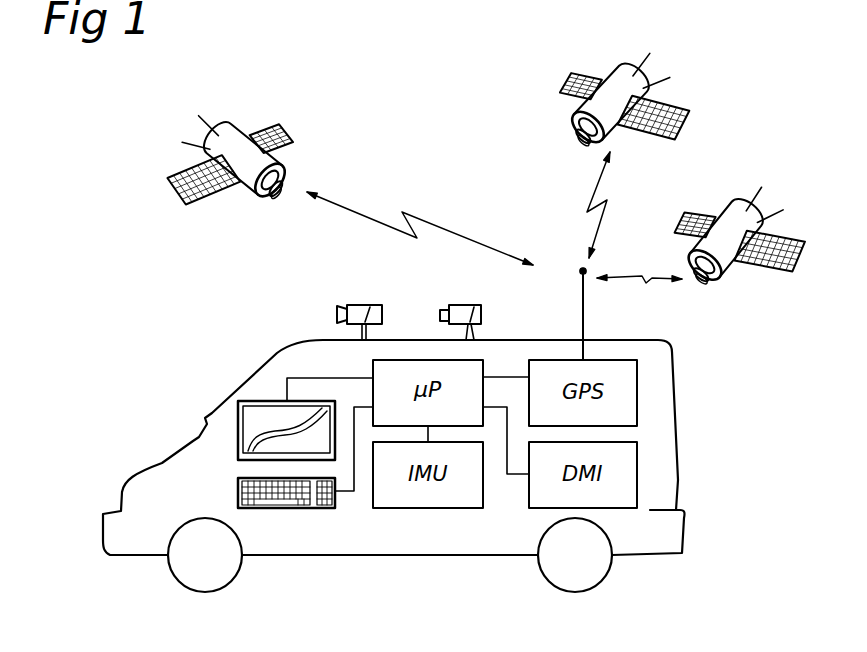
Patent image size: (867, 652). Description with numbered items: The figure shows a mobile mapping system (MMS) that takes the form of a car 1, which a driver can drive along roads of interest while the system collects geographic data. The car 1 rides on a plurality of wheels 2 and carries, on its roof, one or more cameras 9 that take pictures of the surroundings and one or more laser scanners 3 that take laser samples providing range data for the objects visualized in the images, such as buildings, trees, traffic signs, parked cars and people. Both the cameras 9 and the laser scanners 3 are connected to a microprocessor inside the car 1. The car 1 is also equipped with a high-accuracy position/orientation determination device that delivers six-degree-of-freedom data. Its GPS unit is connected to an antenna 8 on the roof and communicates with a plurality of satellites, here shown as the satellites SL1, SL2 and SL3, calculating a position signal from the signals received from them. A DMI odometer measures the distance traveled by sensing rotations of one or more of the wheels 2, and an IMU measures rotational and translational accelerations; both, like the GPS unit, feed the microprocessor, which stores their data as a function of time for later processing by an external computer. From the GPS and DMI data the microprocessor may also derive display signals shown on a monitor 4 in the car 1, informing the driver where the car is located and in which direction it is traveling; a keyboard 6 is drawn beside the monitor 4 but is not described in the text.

The car 1 is at (164, 473).
The wheels 2 is at (195, 567).
The laser scanner 3 is at (472, 316).
The monitor 4 is at (263, 420).
The keyboard 6 is at (238, 490).
The antenna 8 is at (582, 311).
The camera 9 is at (368, 315).
The satellite SL1 is at (231, 164).
The satellite SL2 is at (642, 105).
The satellite SL3 is at (739, 241).